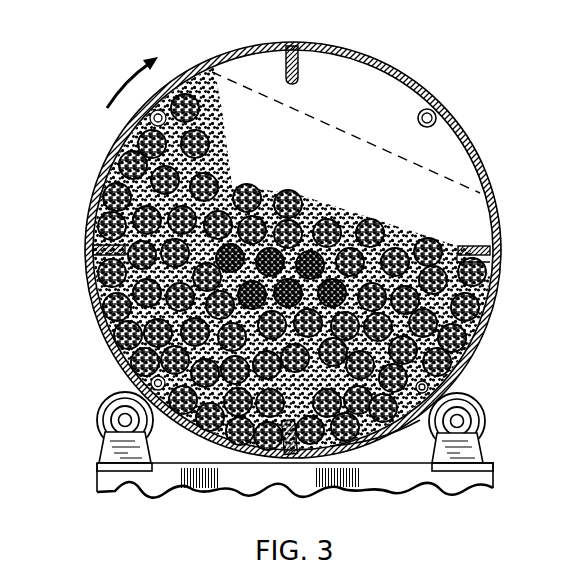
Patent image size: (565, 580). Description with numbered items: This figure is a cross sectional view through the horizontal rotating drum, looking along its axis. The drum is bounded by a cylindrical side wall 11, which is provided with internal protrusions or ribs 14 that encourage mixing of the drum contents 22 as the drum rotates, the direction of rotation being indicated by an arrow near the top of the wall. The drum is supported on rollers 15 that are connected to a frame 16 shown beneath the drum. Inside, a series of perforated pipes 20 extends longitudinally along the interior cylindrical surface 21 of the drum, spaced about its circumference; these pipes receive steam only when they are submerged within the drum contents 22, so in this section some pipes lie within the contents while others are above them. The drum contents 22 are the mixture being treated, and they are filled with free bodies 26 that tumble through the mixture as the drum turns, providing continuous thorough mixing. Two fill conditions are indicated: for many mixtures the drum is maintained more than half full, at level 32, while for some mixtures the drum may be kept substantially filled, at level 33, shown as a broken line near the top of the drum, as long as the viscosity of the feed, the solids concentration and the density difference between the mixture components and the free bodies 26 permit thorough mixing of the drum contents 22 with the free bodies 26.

The cylindrical side wall 11 is at (229, 52).
The internal protrusions or ribs 14 is at (304, 66).
The rollers 15 is at (482, 412).
The frame 16 is at (420, 486).
The perforated pipes 20 is at (430, 108).
The interior cylindrical surface 21 is at (364, 72).
The drum contents 22 is at (386, 443).
The free bodies 26 is at (290, 192).
The level 32 is at (400, 237).
The level 33 is at (337, 137).